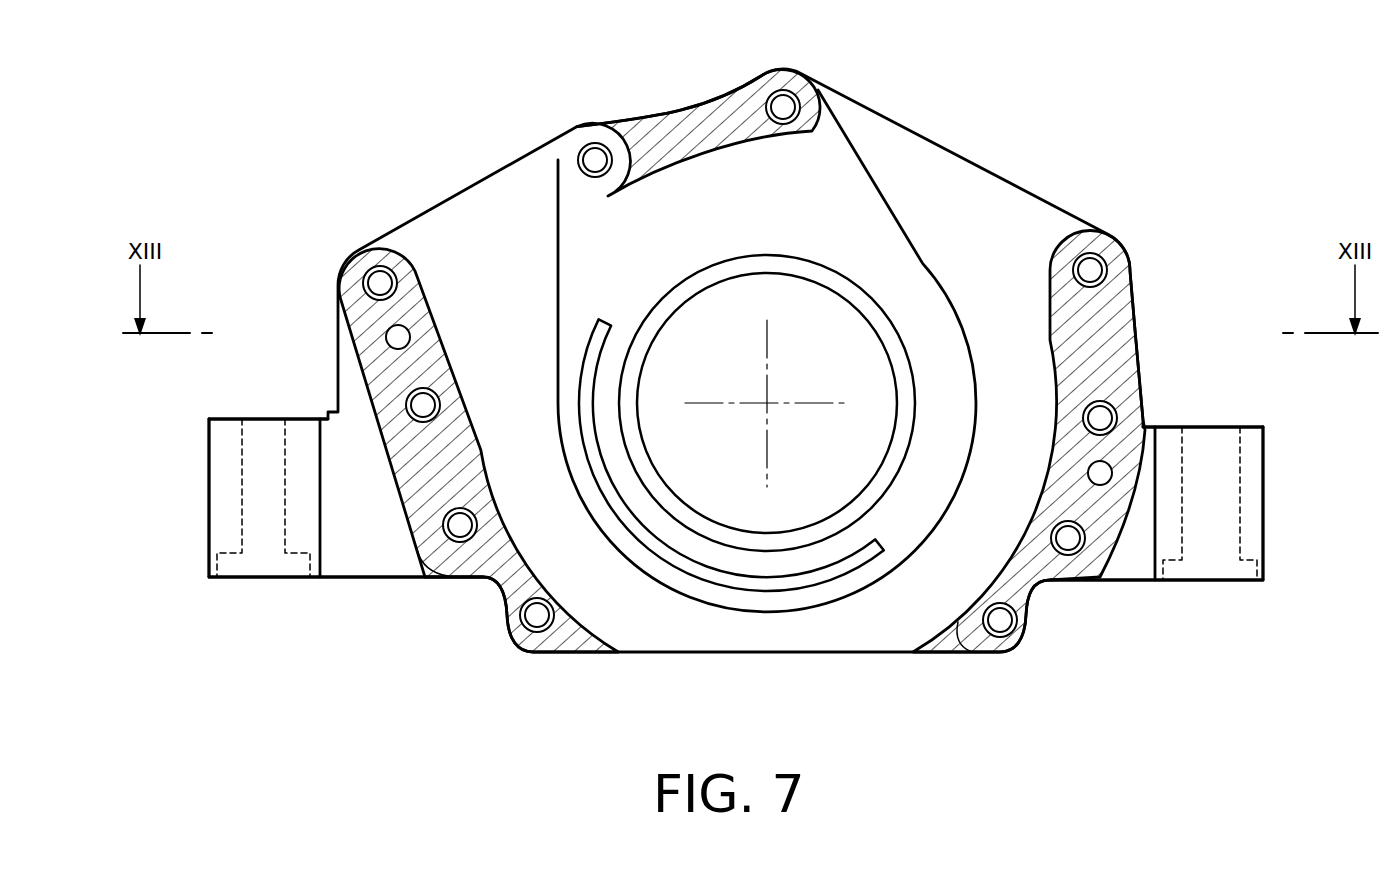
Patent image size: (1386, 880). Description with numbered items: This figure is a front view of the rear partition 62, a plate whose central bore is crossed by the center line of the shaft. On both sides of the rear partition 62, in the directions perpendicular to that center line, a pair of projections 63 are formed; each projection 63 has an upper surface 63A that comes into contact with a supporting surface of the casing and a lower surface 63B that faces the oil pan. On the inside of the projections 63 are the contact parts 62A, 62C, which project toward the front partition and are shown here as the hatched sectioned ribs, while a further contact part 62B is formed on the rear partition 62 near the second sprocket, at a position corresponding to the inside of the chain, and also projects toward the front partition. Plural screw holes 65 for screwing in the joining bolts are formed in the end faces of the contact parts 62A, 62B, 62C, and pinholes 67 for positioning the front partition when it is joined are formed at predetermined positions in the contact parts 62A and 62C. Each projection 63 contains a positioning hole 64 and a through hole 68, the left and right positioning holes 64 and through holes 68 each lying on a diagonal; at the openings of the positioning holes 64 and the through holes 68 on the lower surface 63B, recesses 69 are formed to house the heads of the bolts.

The rear partition 62 is at (970, 157).
The contact part 62A is at (428, 297).
The contact part 62B is at (683, 113).
The contact part 62C is at (1125, 305).
The projection 63 is at (222, 500).
The upper surface 63A is at (222, 419).
The lower surface 63B is at (375, 580).
The positioning hole 64 is at (1238, 530).
The screw hole 65 is at (598, 140).
The pinhole 67 is at (388, 332).
The through hole 68 is at (247, 557).
The recess 69 is at (292, 560).